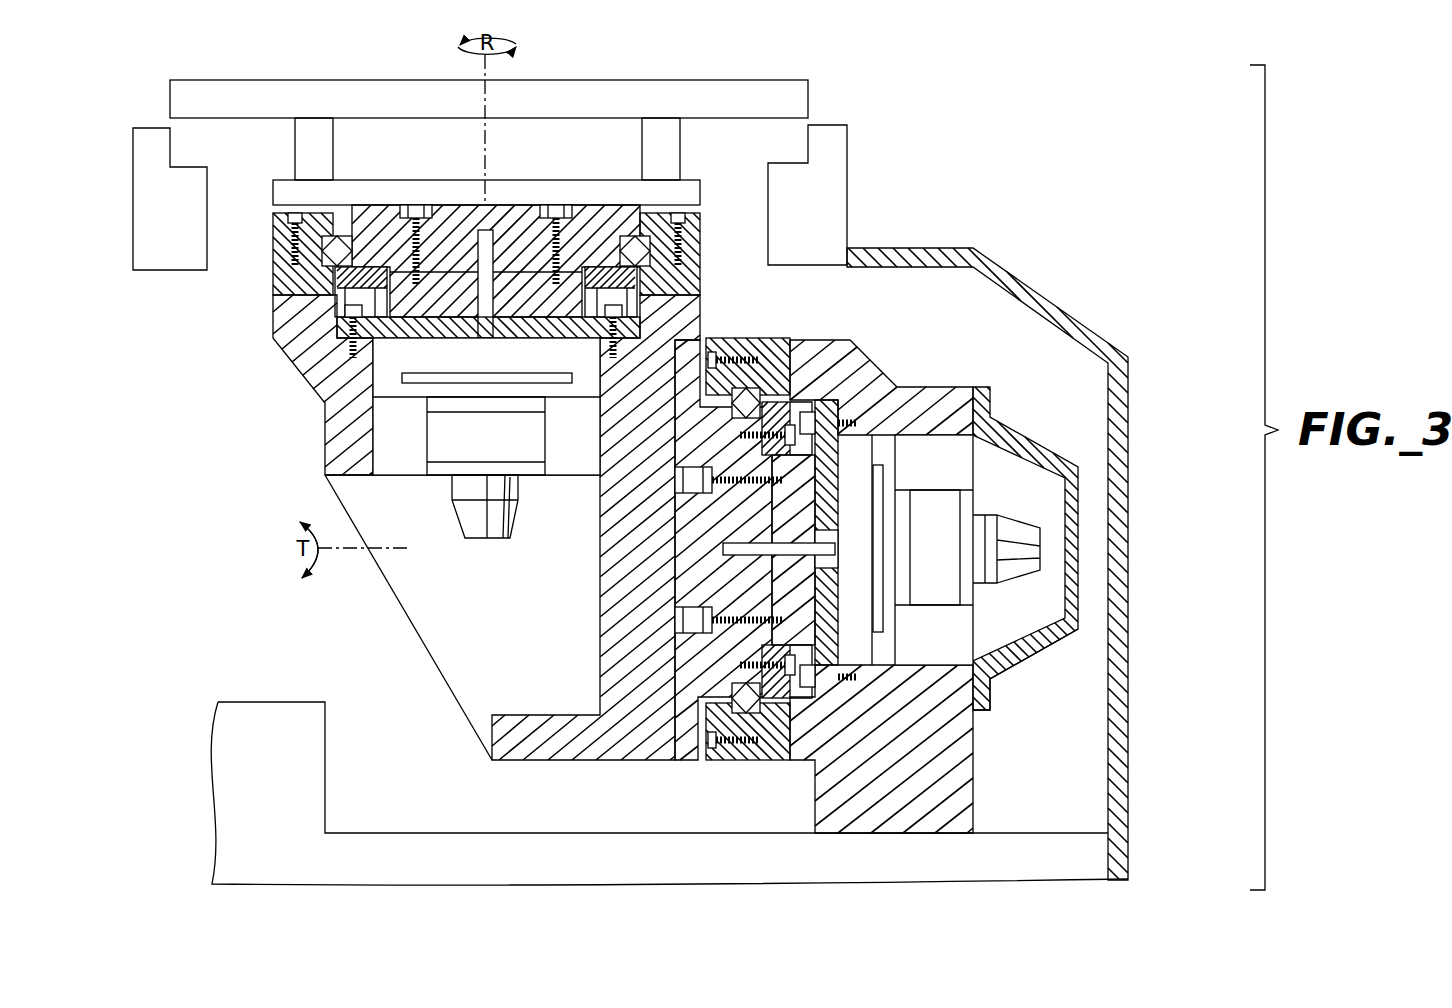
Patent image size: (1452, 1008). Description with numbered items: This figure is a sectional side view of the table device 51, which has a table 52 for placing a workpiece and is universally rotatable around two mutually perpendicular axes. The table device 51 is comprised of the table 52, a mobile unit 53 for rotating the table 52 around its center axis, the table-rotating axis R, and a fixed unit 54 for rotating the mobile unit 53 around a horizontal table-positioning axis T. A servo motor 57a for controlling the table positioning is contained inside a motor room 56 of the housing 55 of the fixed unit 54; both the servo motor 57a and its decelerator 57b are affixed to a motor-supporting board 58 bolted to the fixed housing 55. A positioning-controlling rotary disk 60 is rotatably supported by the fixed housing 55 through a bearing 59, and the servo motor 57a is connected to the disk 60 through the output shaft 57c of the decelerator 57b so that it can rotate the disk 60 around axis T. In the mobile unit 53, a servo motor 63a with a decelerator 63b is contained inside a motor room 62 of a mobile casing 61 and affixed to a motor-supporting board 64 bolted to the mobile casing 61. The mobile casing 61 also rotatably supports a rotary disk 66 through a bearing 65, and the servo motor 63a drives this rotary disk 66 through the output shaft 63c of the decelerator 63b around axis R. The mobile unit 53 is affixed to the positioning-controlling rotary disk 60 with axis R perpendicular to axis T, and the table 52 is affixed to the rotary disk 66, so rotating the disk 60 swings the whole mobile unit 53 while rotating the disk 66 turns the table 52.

The table device 51 is at (1060, 95).
The table 52 is at (638, 95).
The mobile unit 53 is at (402, 612).
The fixed unit 54 is at (878, 370).
The housing 55 is at (958, 772).
The motor room 56 is at (965, 465).
The servo motor 57a is at (1020, 542).
The decelerator 57b is at (1000, 622).
The output shaft 57c is at (840, 552).
The motor-supporting board 58 is at (825, 690).
The bearing 59 is at (758, 394).
The positioning-controlling rotary disk 60 is at (690, 340).
The mobile casing 61 is at (322, 372).
The motor room 62 is at (387, 443).
The servo motor 63a is at (478, 535).
The decelerator 63b is at (447, 448).
The output shaft 63c is at (498, 212).
The motor-supporting board 64 is at (345, 330).
The bearing 65 is at (648, 236).
The rotary disk 66 is at (356, 236).